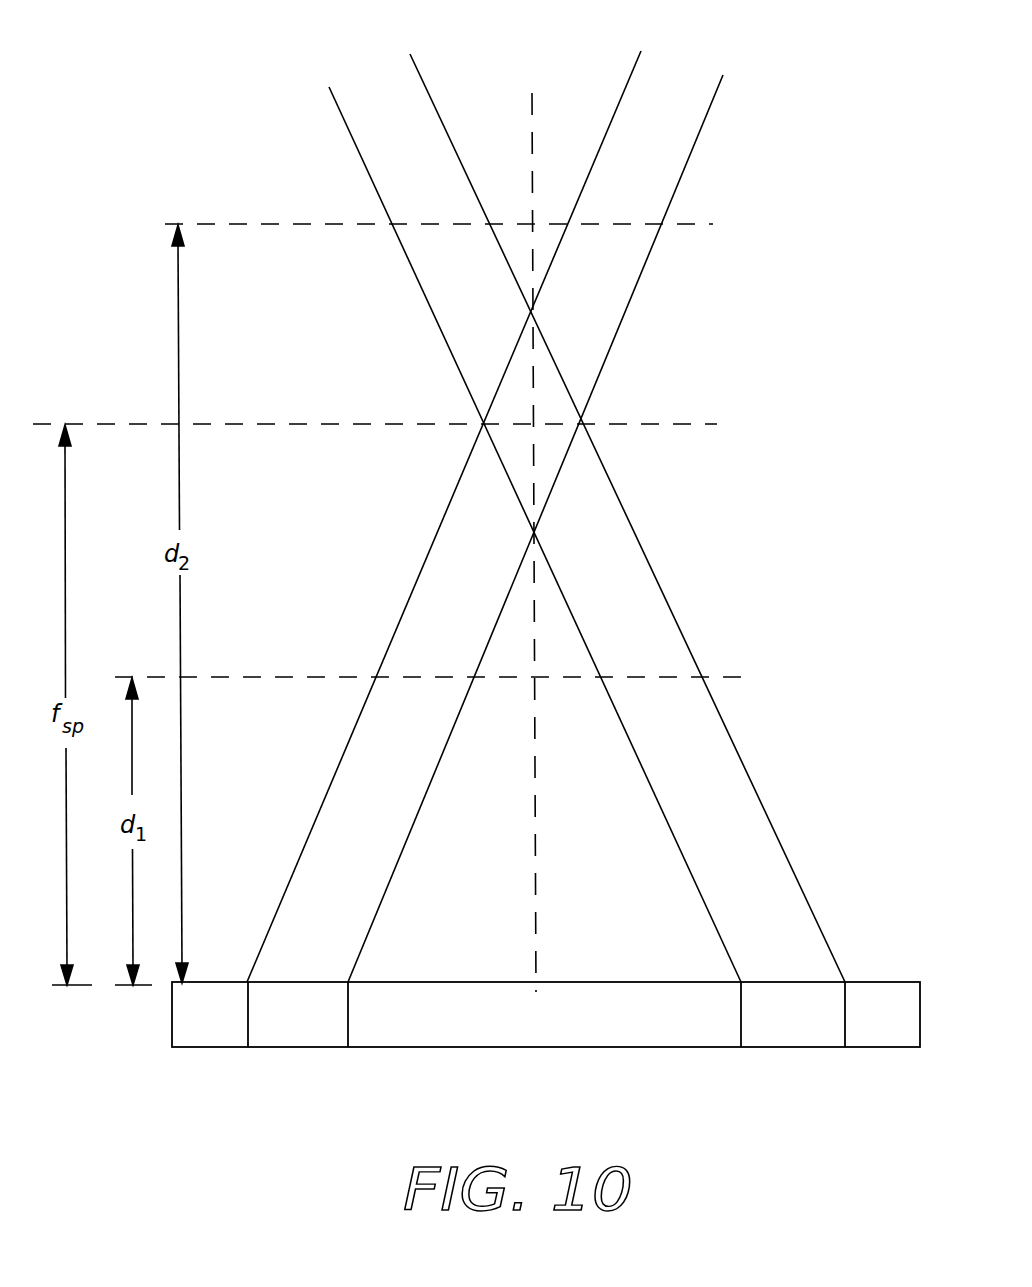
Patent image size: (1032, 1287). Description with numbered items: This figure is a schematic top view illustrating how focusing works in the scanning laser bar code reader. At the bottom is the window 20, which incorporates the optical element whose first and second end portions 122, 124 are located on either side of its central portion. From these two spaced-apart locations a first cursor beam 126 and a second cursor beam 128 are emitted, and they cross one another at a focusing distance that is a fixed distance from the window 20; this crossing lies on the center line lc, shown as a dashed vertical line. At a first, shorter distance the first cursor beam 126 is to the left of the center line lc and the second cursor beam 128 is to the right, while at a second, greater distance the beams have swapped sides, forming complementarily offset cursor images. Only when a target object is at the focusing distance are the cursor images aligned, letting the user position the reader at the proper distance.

The window 20 is at (172, 1018).
The first end portion 122 is at (277, 1048).
The second end portion 124 is at (802, 1048).
The first cursor beam 126 is at (315, 823).
The second cursor beam 128 is at (773, 830).
The center line lc is at (530, 110).